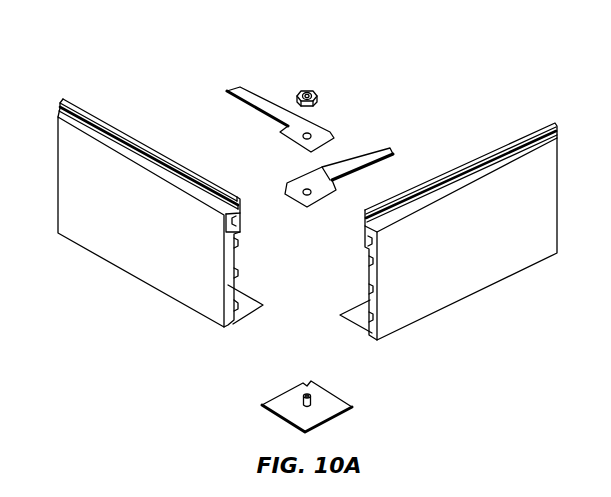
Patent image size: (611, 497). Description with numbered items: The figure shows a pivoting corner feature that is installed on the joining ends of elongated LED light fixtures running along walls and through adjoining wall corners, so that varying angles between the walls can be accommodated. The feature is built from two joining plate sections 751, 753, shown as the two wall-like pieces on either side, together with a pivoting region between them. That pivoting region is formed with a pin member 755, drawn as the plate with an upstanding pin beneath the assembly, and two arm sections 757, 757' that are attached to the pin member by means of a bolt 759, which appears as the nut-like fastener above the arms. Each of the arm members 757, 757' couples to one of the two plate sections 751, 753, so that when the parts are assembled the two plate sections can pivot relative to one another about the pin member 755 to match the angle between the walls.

The plate section 751 is at (127, 233).
The plate section 753 is at (488, 248).
The pin member 755 is at (283, 403).
The arm section 757 is at (342, 153).
The arm section 757' is at (277, 97).
The bolt 759 is at (313, 90).